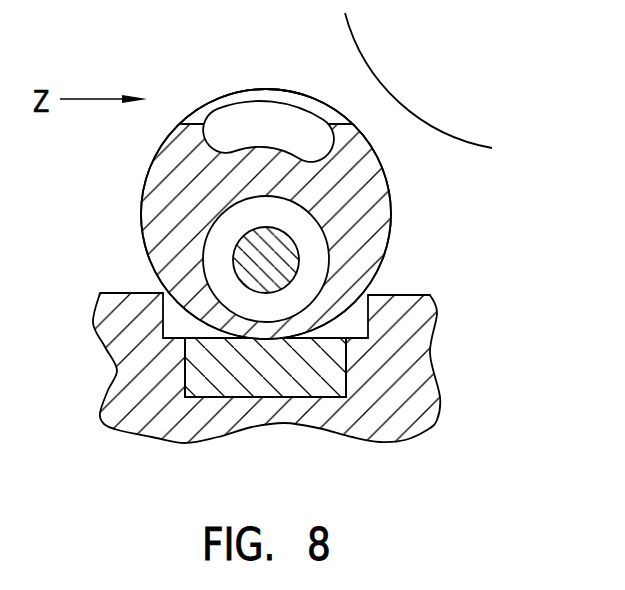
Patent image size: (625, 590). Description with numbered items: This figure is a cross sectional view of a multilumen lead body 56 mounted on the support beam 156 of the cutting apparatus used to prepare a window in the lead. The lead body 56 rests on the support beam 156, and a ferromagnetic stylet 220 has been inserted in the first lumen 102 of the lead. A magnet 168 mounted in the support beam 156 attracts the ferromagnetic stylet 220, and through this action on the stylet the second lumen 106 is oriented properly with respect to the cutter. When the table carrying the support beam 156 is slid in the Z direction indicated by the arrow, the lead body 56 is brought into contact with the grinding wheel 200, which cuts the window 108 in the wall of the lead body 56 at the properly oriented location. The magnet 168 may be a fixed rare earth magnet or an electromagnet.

The lead body 56 is at (393, 218).
The first lumen 102 is at (317, 252).
The second lumen 106 is at (275, 115).
The window 108 is at (228, 98).
The support beam 156 is at (423, 420).
The magnet 168 is at (228, 390).
The grinding wheel 200 is at (441, 135).
The ferromagnetic stylet 220 is at (258, 265).